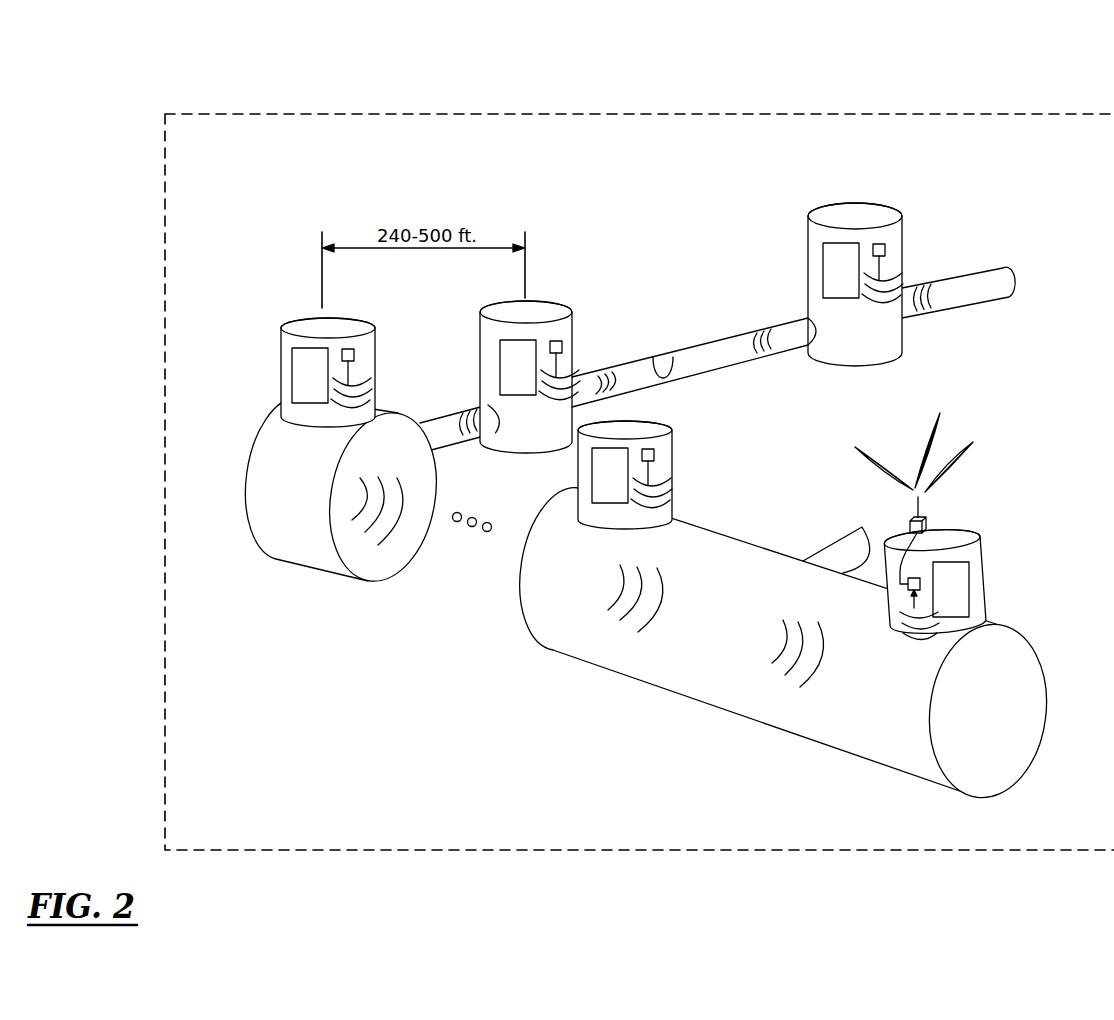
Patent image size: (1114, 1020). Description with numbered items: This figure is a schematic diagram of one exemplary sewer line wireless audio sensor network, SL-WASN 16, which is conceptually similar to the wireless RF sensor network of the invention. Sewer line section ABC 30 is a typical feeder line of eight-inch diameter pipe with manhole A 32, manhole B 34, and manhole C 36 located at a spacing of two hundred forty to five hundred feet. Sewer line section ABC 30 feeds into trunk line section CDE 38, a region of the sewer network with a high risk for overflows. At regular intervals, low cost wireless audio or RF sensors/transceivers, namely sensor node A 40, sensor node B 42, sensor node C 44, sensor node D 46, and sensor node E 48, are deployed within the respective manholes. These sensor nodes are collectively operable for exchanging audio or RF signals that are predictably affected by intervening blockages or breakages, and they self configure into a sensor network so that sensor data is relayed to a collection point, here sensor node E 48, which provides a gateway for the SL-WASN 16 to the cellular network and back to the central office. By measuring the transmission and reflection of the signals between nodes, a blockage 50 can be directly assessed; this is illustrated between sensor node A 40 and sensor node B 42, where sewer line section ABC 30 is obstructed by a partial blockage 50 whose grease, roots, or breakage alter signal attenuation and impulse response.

The sewer line wireless audio sensor network (SL-WASN) 16 is at (1013, 114).
The sewer line section ABC 30 is at (605, 343).
The manhole A 32 is at (872, 203).
The manhole B 34 is at (550, 298).
The manhole C 36 is at (378, 366).
The trunk line section CDE 38 is at (746, 514).
The sensor node A 40 is at (863, 273).
The sensor node B 42 is at (540, 370).
The sensor node C 44 is at (332, 378).
The sensor node D 46 is at (625, 475).
The sensor node E 48 is at (921, 526).
The partial blockage 50 is at (663, 374).